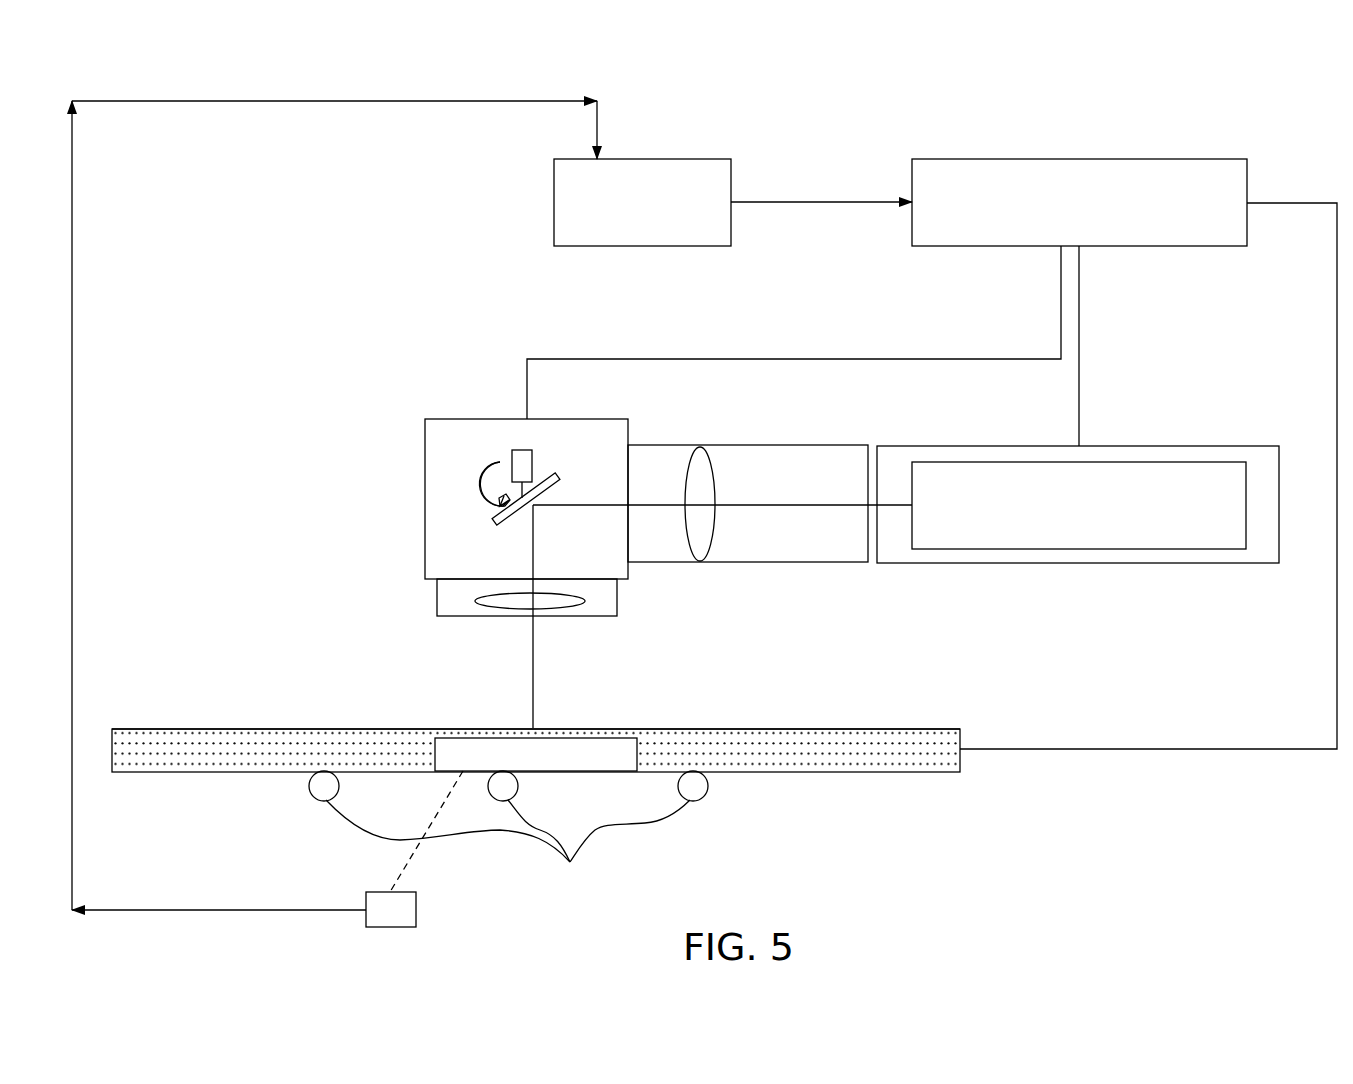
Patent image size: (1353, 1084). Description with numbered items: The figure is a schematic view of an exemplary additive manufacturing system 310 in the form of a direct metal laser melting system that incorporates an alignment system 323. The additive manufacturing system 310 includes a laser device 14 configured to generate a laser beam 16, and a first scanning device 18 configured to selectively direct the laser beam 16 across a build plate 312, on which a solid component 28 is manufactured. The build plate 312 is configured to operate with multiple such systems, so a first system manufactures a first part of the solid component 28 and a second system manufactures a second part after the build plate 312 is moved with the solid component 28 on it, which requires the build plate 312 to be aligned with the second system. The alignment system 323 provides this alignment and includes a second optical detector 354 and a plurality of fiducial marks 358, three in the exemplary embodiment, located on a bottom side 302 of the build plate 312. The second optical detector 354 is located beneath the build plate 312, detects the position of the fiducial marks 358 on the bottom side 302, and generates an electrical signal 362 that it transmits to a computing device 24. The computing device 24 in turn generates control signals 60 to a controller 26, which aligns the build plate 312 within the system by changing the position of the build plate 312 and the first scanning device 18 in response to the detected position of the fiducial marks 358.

The additive manufacturing system 310 is at (1164, 95).
The electrical signal 362 is at (597, 128).
The computing device 24 is at (642, 158).
The control signals 60 is at (820, 201).
The controller 26 is at (1078, 158).
The laser device 14 is at (1158, 550).
The alignment system 323 is at (921, 598).
The laser beam 16 is at (788, 503).
The first scanning device 18 is at (463, 418).
The bottom side 302 is at (837, 772).
The build plate 312 is at (837, 729).
The solid component 28 is at (443, 737).
The fiducial marks 358 is at (508, 835).
The second optical detector 354 is at (380, 892).